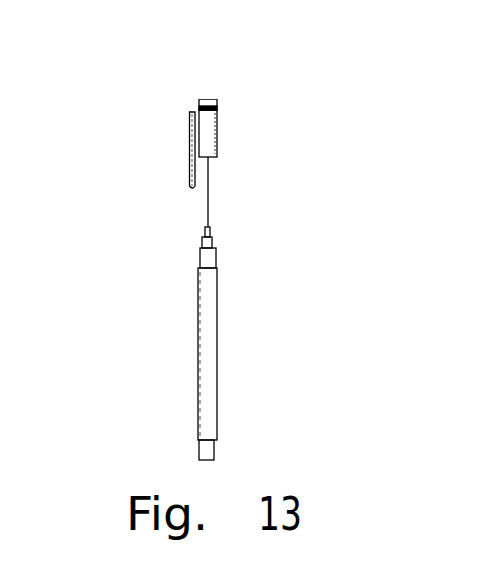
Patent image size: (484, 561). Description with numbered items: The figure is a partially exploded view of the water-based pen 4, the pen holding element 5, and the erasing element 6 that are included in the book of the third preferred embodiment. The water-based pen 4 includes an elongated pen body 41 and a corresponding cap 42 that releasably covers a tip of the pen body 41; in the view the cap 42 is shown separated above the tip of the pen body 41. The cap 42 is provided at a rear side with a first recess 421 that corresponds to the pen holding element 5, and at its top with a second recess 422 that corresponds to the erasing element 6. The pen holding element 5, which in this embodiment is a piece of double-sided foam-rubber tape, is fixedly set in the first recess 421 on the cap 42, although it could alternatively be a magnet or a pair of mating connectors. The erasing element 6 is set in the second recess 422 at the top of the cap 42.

The water-based pen 4 is at (180, 151).
The pen body 41 is at (205, 358).
The cap 42 is at (190, 183).
The first recess 421 is at (218, 110).
The second recess 422 is at (217, 104).
The pen holding element 5 is at (205, 141).
The erasing element 6 is at (210, 98).